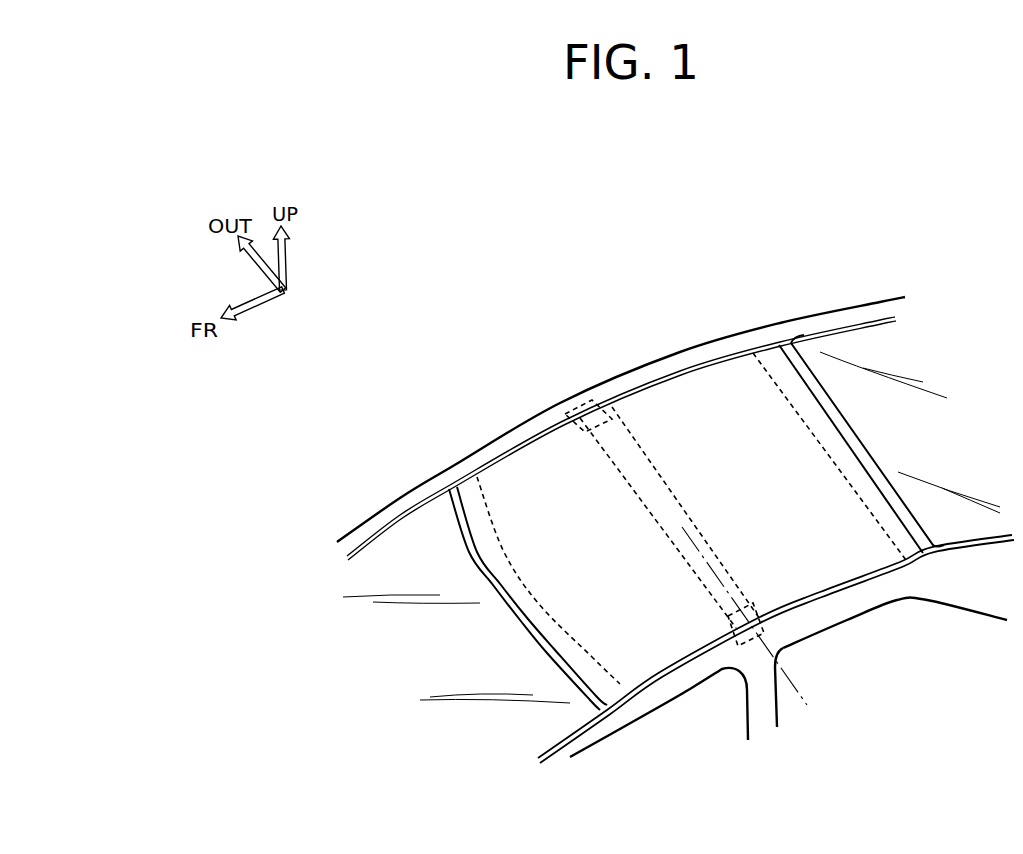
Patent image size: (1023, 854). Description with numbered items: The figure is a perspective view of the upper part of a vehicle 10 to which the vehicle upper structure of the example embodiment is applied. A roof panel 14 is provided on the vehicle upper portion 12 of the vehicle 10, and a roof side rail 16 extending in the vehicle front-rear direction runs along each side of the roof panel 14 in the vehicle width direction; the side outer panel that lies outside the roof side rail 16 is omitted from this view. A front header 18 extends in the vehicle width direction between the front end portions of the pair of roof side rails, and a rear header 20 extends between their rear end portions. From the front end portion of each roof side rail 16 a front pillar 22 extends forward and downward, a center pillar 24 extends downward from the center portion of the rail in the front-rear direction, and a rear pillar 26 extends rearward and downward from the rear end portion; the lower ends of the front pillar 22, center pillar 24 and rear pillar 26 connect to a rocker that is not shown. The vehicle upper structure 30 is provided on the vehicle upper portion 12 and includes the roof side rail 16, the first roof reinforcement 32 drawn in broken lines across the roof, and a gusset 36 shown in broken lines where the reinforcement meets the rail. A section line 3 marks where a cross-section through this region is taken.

The vehicle 10 is at (712, 262).
The vehicle upper portion 12 is at (737, 324).
The roof panel 14 is at (677, 396).
The roof side rail 16 is at (540, 427).
The front header 18 is at (526, 583).
The rear header 20 is at (802, 413).
The front pillar 22 is at (383, 508).
The center pillar 24 is at (742, 712).
The rear pillar 26 is at (983, 605).
The vehicle upper structure 30 is at (767, 600).
The first roof reinforcement 32 is at (647, 450).
The gusset 36 is at (583, 404).
The section line 3- 3 is at (690, 532).